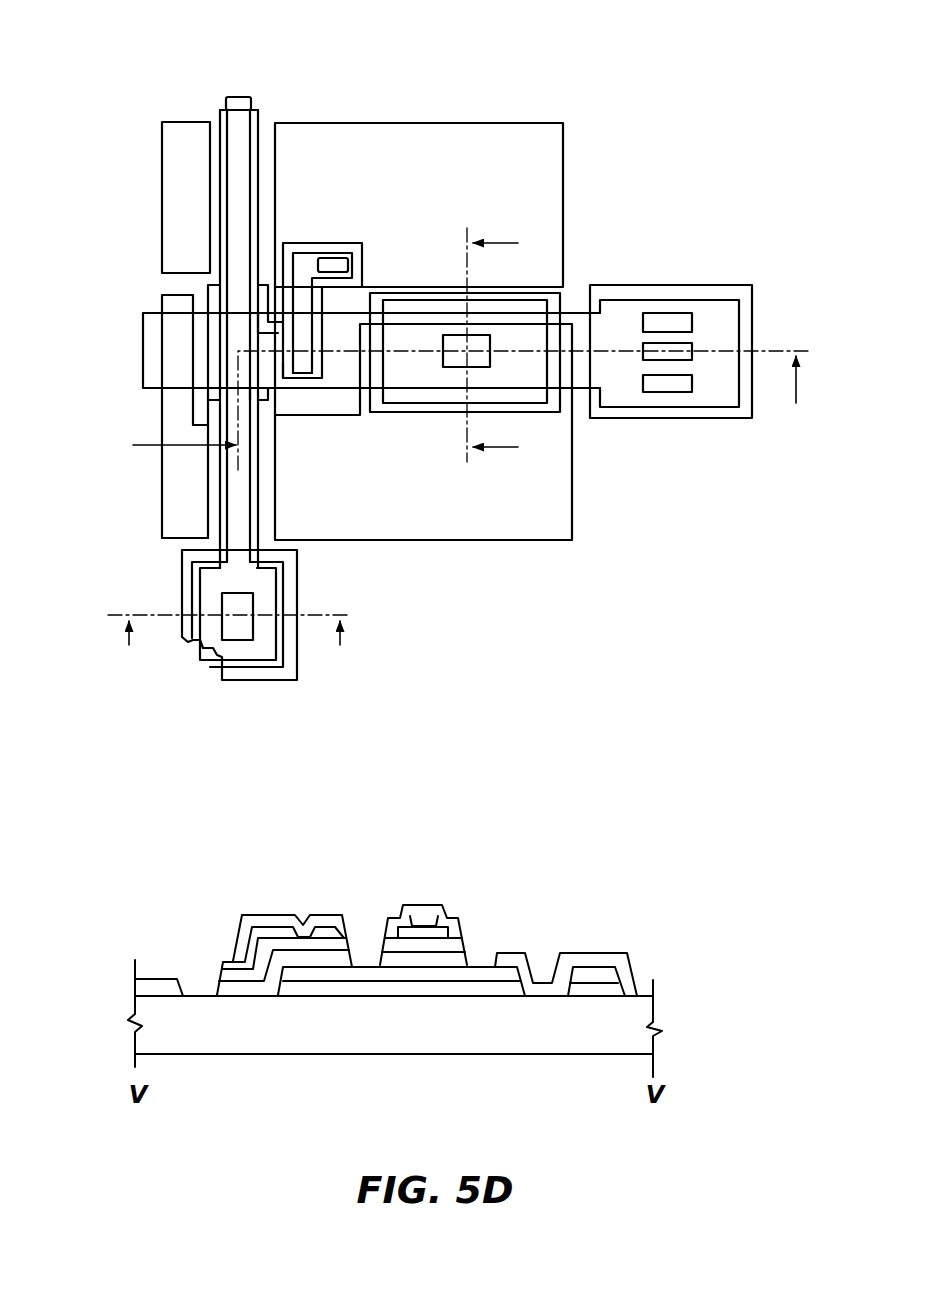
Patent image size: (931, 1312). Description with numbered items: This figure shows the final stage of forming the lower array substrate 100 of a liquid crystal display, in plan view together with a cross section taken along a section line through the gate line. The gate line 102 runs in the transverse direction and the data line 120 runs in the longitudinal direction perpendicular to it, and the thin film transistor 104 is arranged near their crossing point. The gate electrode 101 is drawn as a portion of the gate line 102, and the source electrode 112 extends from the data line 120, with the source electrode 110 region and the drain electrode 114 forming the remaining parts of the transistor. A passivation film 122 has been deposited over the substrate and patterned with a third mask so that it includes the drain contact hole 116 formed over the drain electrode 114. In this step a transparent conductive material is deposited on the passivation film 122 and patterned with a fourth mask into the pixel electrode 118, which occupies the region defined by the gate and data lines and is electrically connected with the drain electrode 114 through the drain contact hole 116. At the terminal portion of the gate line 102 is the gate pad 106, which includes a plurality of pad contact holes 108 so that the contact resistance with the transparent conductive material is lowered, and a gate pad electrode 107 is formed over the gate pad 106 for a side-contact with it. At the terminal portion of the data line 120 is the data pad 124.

The lower array substrate 100 is at (403, 94).
The gate electrode 101 is at (284, 364).
The gate line 102 is at (579, 311).
The thin film transistor 104 is at (529, 398).
The gate pad 106 is at (716, 390).
The gate pad electrode 107 is at (614, 954).
The pad contact holes 108 is at (694, 348).
The source electrode 110 is at (276, 342).
The source electrode 112 is at (262, 362).
The drain electrode 114 is at (306, 372).
The drain contact hole 116 is at (338, 263).
The pixel electrode 118 is at (508, 132).
The data line 120 is at (260, 108).
The passivation film 122 is at (231, 97).
The data pad 124 is at (242, 637).